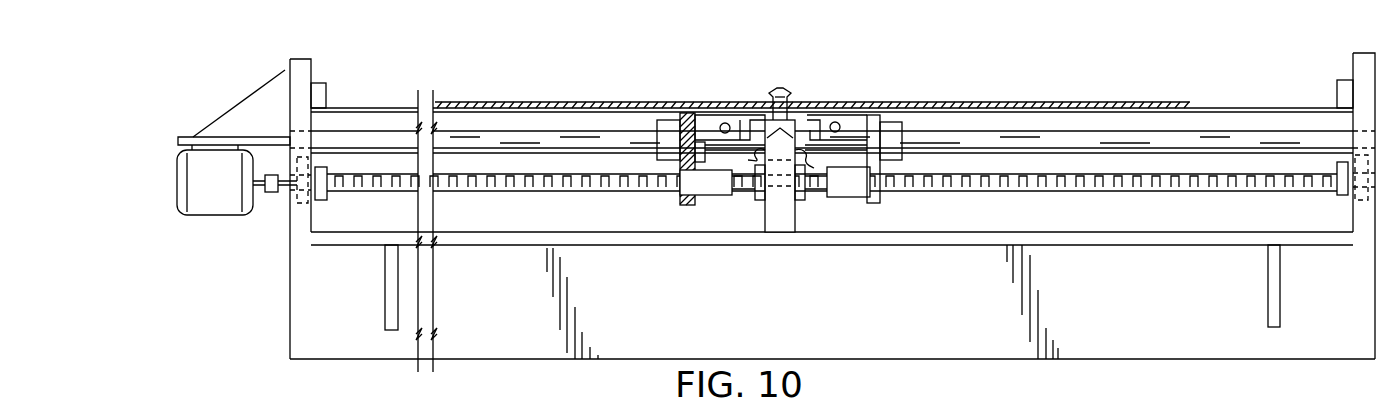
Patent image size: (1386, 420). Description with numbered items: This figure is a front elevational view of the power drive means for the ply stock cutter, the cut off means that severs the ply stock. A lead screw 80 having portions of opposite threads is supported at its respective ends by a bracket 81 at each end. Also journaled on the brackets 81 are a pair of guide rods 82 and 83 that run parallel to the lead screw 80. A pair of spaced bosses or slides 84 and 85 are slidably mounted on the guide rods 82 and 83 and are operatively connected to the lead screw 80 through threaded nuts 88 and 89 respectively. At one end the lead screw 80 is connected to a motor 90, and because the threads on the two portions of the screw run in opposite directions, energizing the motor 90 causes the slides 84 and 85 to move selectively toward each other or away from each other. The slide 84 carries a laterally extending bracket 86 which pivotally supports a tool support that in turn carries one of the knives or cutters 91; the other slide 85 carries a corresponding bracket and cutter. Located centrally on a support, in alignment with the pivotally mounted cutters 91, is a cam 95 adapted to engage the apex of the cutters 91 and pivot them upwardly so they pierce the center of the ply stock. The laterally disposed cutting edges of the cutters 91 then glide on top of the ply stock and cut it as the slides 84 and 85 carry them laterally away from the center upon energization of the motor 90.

The lead screw 80 is at (1003, 185).
The bracket 81 is at (311, 72).
The guide rod 82 is at (547, 140).
The guide rod 83 is at (618, 140).
The slide 84 is at (668, 155).
The slide 85 is at (892, 127).
The bracket 86 is at (710, 123).
The threaded nut 88 is at (710, 187).
The threaded nut 89 is at (853, 188).
The motor 90 is at (220, 206).
The cutter 91 is at (783, 97).
The cam 95 is at (807, 158).